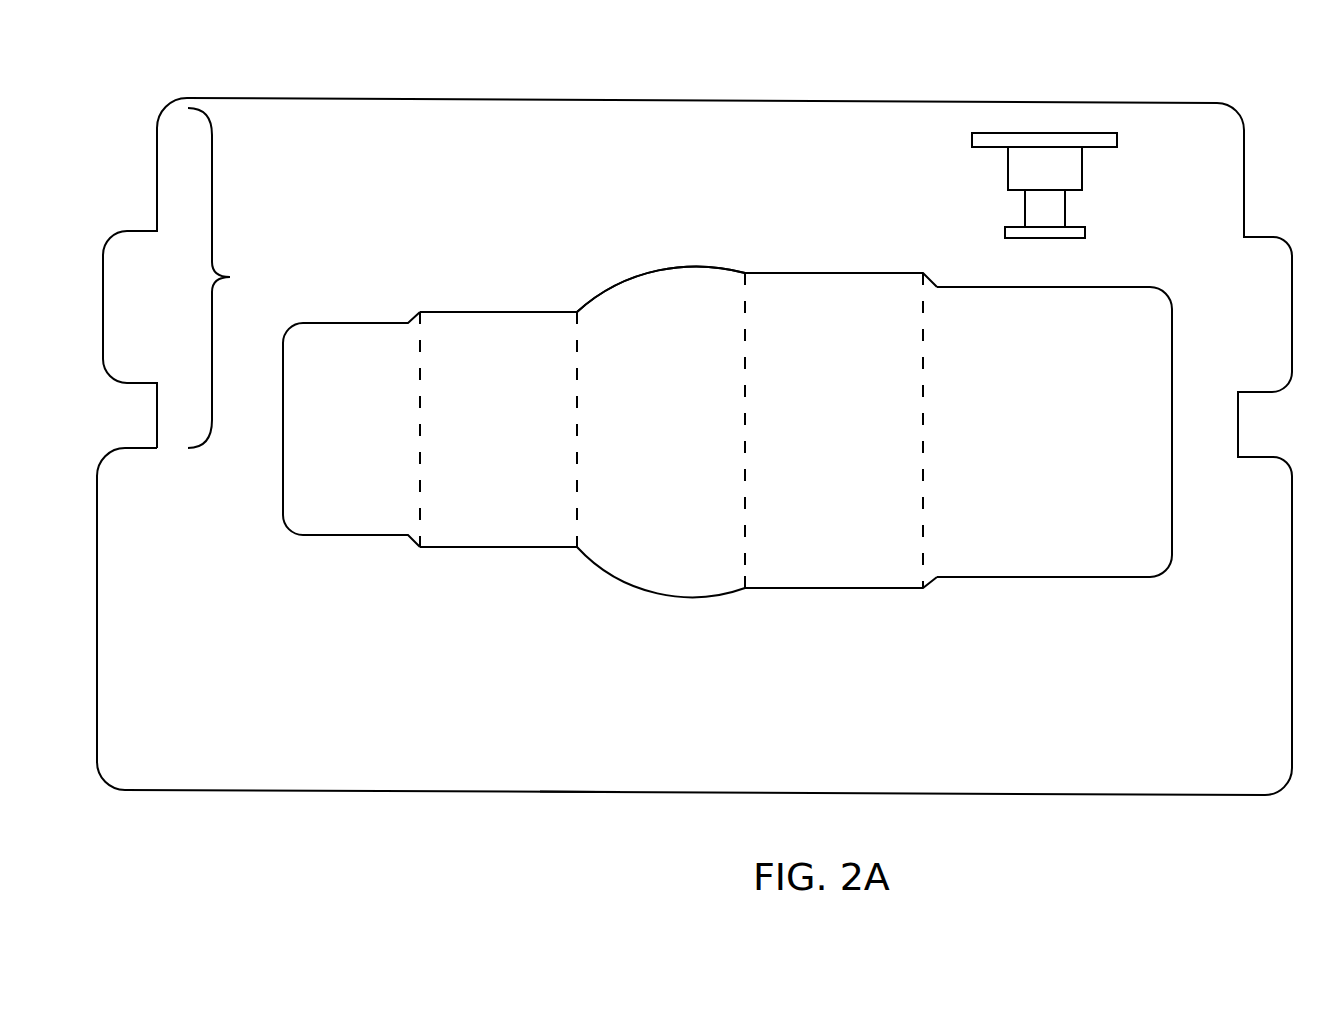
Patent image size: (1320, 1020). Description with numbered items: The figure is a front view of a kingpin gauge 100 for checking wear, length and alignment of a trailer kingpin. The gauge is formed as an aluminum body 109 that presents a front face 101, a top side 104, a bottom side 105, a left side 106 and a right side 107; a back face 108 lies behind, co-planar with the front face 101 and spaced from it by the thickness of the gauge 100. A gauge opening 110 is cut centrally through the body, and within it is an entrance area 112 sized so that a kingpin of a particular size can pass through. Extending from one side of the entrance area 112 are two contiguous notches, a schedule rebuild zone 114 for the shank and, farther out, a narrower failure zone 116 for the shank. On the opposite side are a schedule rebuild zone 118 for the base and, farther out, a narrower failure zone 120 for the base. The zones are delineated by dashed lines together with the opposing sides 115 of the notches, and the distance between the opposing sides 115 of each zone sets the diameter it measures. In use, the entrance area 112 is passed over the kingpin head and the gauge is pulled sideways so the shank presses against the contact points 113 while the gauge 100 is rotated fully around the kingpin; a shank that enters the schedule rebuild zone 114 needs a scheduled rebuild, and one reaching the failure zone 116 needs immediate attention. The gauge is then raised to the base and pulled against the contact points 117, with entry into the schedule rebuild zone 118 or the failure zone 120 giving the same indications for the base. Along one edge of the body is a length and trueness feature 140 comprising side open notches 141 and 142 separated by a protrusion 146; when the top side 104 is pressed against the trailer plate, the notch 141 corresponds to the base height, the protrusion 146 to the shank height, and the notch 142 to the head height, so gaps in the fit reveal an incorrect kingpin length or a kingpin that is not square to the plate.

The kingpin gauge 100 is at (312, 800).
The front face 101 is at (283, 173).
The top side 104 is at (555, 100).
The bottom side 105 is at (580, 794).
The left side 106 is at (95, 759).
The right side 107 is at (1290, 728).
The back face 108 is at (432, 798).
The aluminum body 109 is at (932, 759).
The gauge opening 110 is at (623, 278).
The entrance area 112 is at (661, 431).
The contact points 113 is at (577, 315).
The schedule rebuild zone 114 is at (498, 429).
The opposing sides 115 is at (373, 322).
The failure zone 116 is at (351, 429).
The contact points 117 is at (745, 277).
The schedule rebuild zone 118 is at (841, 430).
The failure zone 120 is at (1054, 432).
The length and trueness feature 140 is at (229, 278).
The open notch 141 is at (151, 164).
The open notch 142 is at (132, 415).
The protrusion 146 is at (126, 307).